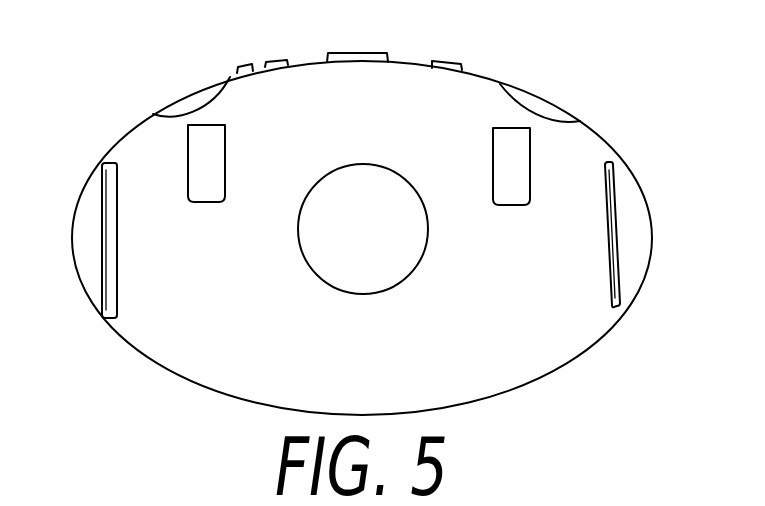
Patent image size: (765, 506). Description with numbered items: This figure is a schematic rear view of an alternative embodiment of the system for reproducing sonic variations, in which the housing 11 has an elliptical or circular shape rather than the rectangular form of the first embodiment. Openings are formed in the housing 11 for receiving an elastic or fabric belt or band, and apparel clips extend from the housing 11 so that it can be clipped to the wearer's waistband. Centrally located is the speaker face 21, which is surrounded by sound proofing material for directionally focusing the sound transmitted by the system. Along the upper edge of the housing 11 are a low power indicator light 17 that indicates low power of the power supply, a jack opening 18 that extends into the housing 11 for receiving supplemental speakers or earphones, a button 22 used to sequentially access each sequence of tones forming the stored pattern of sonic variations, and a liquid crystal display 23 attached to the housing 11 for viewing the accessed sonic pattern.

The housing 11 is at (527, 295).
The low power indicator light 17 is at (274, 56).
The jack opening 18 is at (236, 63).
The speaker face 21 is at (363, 298).
The button 22 is at (464, 60).
The liquid crystal display 23 is at (359, 68).